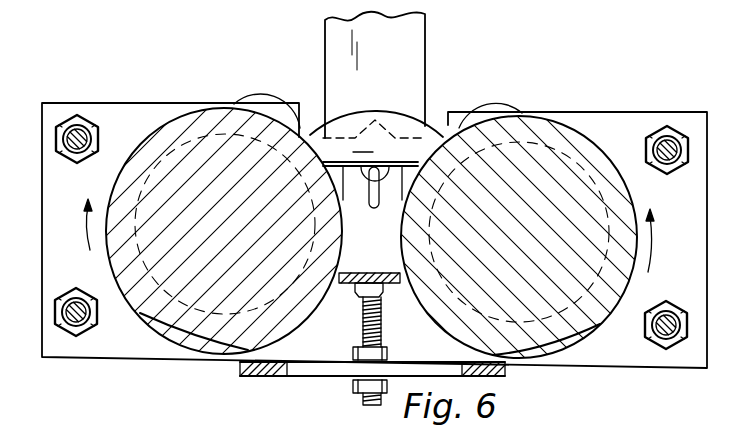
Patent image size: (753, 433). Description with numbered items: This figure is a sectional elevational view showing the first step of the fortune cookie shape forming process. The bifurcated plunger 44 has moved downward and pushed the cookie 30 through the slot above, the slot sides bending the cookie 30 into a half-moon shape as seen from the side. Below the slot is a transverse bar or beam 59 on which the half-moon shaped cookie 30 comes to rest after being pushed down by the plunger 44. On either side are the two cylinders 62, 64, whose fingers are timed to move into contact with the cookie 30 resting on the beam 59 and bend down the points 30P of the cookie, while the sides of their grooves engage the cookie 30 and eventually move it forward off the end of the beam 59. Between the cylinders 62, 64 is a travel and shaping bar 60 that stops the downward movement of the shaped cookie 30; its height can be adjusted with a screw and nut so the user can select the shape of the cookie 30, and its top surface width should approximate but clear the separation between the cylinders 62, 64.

The cookie 30 is at (426, 150).
The points of the cookie 30P is at (307, 138).
The bifurcated plunger 44 is at (342, 60).
The transverse bar or beam 59 is at (379, 204).
The travel and shaping bar 60 is at (391, 284).
The cylinder 62 is at (355, 356).
The cylinder 64 is at (362, 319).